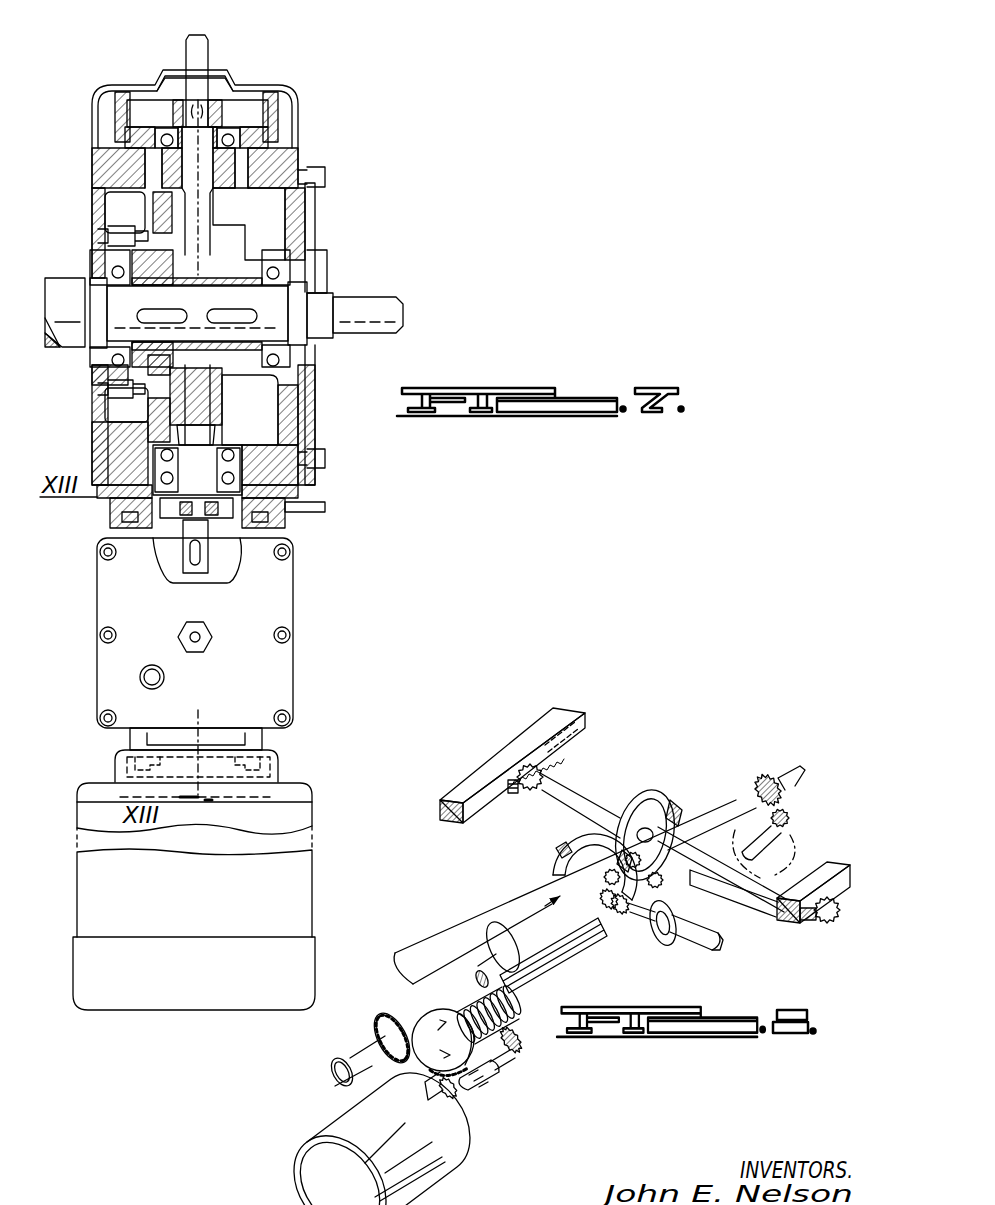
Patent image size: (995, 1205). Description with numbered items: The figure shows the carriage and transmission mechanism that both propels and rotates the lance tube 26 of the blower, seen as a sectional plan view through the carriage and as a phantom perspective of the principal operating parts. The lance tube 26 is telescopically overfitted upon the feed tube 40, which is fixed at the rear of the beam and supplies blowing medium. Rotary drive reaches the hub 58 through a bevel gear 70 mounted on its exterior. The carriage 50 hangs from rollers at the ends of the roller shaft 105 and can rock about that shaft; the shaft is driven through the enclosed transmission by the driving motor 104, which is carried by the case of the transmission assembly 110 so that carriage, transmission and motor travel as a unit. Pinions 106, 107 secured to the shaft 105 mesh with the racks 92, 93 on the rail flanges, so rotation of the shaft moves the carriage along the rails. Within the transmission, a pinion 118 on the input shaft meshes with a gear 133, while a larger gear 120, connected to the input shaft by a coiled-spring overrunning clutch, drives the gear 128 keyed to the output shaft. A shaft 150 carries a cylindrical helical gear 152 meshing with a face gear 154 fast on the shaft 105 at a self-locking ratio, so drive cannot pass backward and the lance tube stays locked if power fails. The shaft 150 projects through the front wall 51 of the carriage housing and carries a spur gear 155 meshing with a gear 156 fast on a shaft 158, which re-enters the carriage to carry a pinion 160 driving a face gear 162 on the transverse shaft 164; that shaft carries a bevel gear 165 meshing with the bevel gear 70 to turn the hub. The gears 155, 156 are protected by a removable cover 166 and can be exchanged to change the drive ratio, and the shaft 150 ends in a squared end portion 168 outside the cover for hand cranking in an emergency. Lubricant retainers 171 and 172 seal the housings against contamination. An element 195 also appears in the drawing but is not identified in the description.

In FIG. 7, the squared end portion 168 is at (186, 44).
In FIG. 8, the squared end portion 168 is at (795, 772).
In FIG. 7, the lubricant retainer 171 is at (160, 90).
In FIG. 7, the spur gear 155 is at (222, 110).
In FIG. 8, the spur gear 155 is at (750, 778).
In FIG. 7, the removable cover 166 is at (273, 102).
In FIG. 7, the front wall 51 is at (253, 138).
In FIG. 7, the face gear 154 is at (153, 208).
In FIG. 8, the face gear 154 is at (680, 790).
In FIG. 7, the lubricant retainer 172 is at (330, 277).
In FIG. 7, the roller shaft 105 is at (385, 300).
In FIG. 8, the roller shaft 105 is at (585, 790).
In FIG. 7, the cylindrical helical gear 152 is at (227, 420).
In FIG. 8, the cylindrical helical gear 152 is at (640, 917).
In FIG. 7, the carriage 50 is at (312, 423).
In FIG. 7, the shaft 150 is at (195, 488).
In FIG. 8, the shaft 150 is at (545, 985).
In FIG. 7, the lever 195 is at (340, 507).
In FIG. 7, the transmission assembly 110 is at (296, 660).
In FIG. 7, the driving motor 104 is at (312, 890).
In FIG. 8, the driving motor 104 is at (405, 1190).
In FIG. 8, the rack 93 is at (532, 730).
In FIG. 8, the pinion 107 is at (512, 795).
In FIG. 8, the bevel gear 70 is at (575, 848).
In FIG. 8, the hub 58 is at (528, 882).
In FIG. 8, the lance tube 26 is at (425, 972).
In FIG. 8, the bevel gear 165 is at (605, 902).
In FIG. 8, the face gear 162 is at (653, 950).
In FIG. 8, the transverse shaft 164 is at (700, 940).
In FIG. 8, the shaft 158 is at (750, 845).
In FIG. 8, the gear 156 is at (787, 815).
In FIG. 8, the pinion 160 is at (728, 906).
In FIG. 8, the rack 92 is at (842, 888).
In FIG. 8, the pinion 106 is at (812, 922).
In FIG. 8, the gear 128 is at (475, 965).
In FIG. 8, the gear 133 is at (425, 1012).
In FIG. 8, the feed tube 40 is at (358, 1050).
In FIG. 8, the pinion 118 is at (462, 1095).
In FIG. 8, the gear 120 is at (522, 1060).